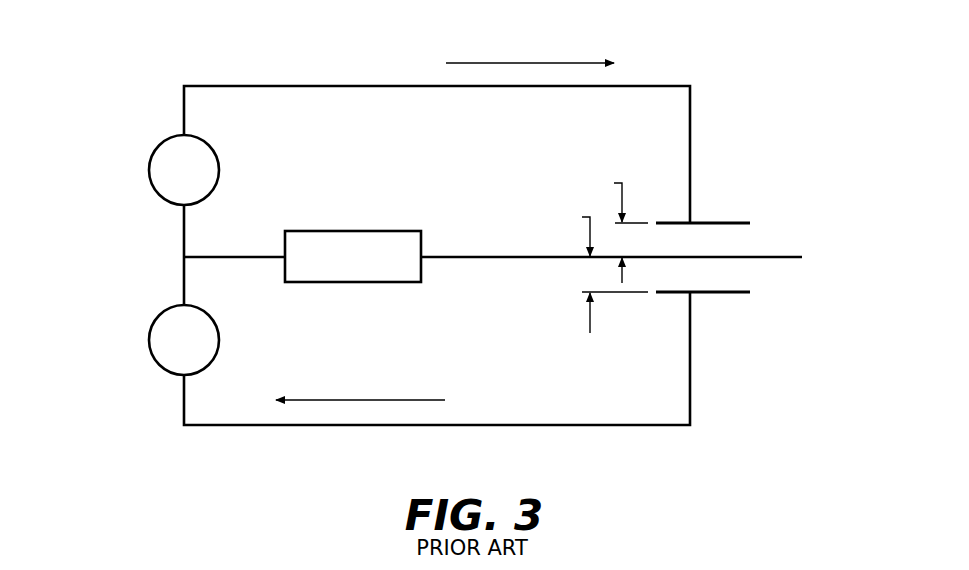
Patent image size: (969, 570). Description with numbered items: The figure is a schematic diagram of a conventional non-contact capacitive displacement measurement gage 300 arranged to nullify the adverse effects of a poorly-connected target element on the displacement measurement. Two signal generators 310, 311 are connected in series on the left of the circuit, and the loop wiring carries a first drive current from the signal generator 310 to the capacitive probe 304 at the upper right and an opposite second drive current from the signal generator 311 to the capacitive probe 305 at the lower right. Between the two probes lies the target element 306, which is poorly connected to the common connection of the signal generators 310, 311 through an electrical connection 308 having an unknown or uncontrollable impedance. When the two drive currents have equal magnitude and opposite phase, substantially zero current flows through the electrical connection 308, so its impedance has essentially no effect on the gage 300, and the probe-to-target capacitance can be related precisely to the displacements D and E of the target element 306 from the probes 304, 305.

The non-contact capacitive displacement measurement gage 300 is at (138, 70).
The signal generator 310 is at (160, 145).
The signal generator 311 is at (160, 313).
The electrical connection 308 is at (388, 230).
The capacitive probe 304 is at (725, 222).
The target element 306 is at (760, 256).
The capacitive probe 305 is at (725, 293).